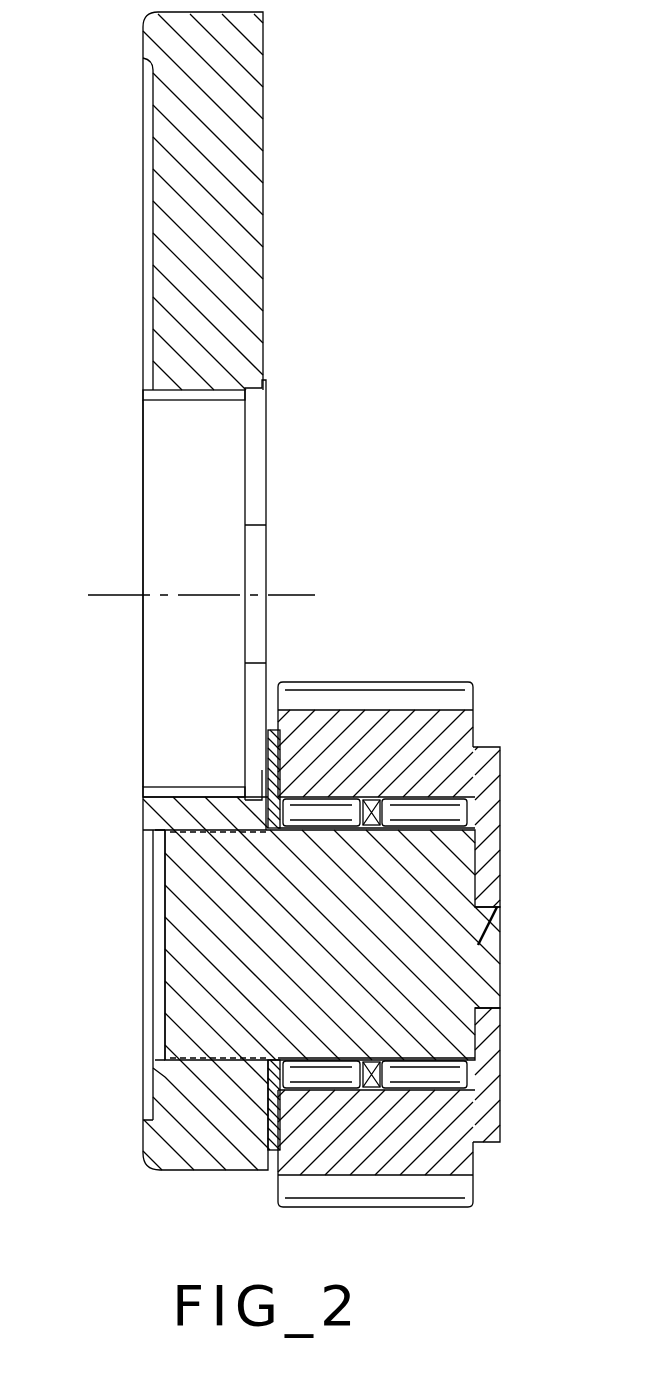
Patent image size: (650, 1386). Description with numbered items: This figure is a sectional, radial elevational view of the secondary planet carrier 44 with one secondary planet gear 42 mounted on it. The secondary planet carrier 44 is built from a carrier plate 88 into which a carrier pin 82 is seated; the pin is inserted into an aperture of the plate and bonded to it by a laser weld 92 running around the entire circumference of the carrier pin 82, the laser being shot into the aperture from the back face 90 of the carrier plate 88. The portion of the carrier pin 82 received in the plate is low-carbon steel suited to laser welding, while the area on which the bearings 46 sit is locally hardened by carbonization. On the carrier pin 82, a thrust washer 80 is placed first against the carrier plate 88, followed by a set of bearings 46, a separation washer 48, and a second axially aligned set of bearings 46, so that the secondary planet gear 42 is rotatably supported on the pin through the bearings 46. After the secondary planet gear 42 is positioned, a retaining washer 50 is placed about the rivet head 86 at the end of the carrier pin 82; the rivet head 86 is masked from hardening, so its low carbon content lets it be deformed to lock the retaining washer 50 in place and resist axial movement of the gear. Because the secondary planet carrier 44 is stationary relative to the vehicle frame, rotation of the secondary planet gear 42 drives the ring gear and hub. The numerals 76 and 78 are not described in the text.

The secondary planet gear 42 is at (468, 715).
The secondary planet carrier 44 is at (455, 255).
The bearings 46 is at (330, 800).
The separation washer 48 is at (400, 862).
The retaining washer 50 is at (492, 1085).
The cup member 76 is at (130, 503).
The rings 78 is at (182, 395).
The thrust washer 80 is at (270, 735).
The carrier pin 82 is at (337, 956).
The rivet head 86 is at (492, 1010).
The carrier plate 88 is at (243, 168).
The back face 90 is at (143, 1130).
The laser weld 92 is at (178, 818).